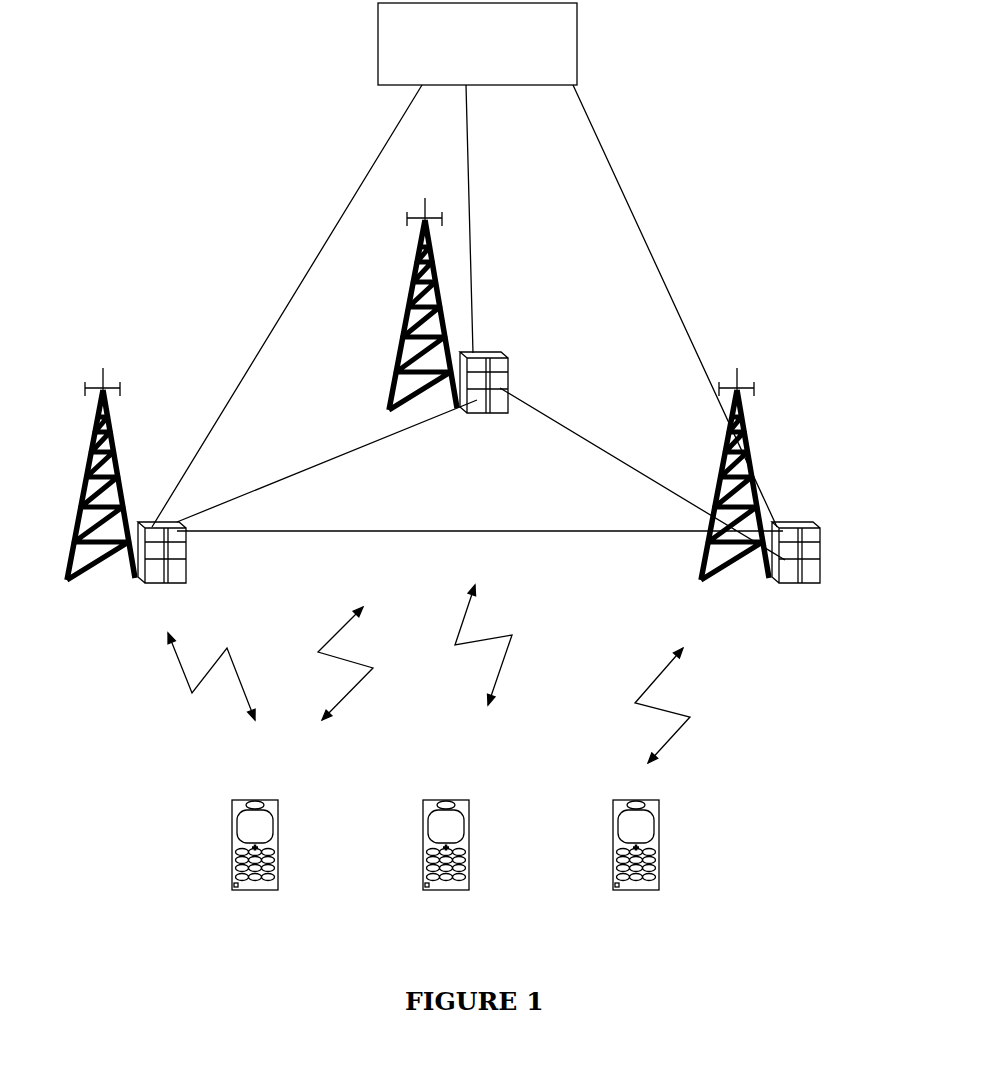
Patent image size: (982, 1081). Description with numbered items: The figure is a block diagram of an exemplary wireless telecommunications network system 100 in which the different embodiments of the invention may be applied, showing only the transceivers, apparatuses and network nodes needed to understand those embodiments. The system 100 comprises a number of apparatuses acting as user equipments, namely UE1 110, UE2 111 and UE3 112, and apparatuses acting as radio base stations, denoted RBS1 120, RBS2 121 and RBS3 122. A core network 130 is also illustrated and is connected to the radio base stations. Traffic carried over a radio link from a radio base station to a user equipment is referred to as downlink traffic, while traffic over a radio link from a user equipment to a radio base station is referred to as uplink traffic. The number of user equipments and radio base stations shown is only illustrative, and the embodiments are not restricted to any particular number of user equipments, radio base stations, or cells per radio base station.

The wireless telecommunications network system 100 is at (192, 102).
The core network 130 is at (585, 50).
The radio base station RBS1 120 is at (508, 370).
The radio base station RBS2 121 is at (793, 512).
The radio base station RBS3 122 is at (150, 513).
The user equipment UE1 110 is at (279, 955).
The user equipment UE2 111 is at (469, 955).
The user equipment UE3 112 is at (659, 955).